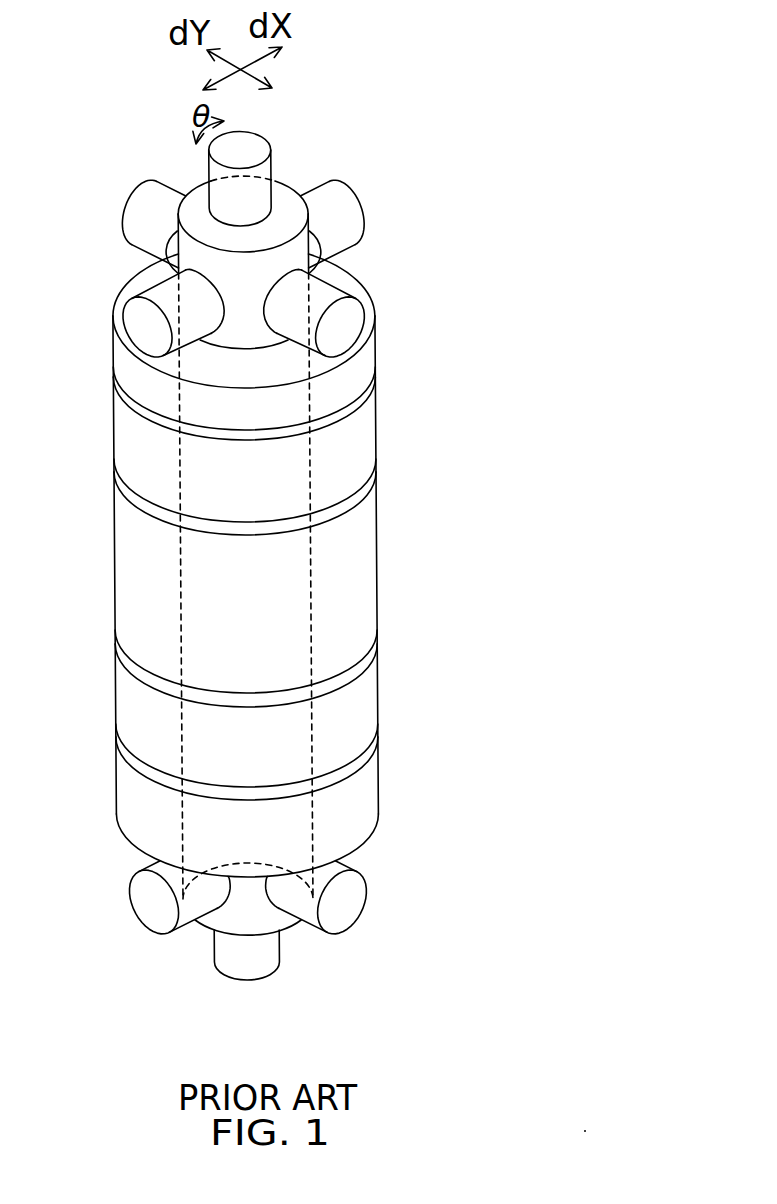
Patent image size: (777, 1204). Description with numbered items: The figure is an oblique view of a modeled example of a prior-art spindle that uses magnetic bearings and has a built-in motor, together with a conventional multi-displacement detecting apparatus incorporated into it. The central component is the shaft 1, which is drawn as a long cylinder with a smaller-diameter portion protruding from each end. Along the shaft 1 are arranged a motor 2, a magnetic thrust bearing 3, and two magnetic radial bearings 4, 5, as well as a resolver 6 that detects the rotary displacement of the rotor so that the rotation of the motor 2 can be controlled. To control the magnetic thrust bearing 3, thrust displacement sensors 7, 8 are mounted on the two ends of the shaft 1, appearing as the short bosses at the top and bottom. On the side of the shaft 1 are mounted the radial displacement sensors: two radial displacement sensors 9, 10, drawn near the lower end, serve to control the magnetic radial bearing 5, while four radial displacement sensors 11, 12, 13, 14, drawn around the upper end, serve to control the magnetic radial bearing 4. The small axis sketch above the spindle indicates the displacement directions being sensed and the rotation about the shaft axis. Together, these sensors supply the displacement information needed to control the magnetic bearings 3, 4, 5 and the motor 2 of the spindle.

The shaft 1 is at (283, 203).
The motor 2 is at (357, 560).
The magnetic thrust bearing 3 is at (357, 695).
The magnetic radial bearing 4 is at (360, 425).
The magnetic radial bearing 5 is at (367, 793).
The resolver 6 is at (374, 333).
The thrust displacement sensor 7 is at (257, 151).
The thrust displacement sensor 8 is at (272, 953).
The radial displacement sensor 9 is at (143, 902).
The radial displacement sensor 10 is at (348, 898).
The radial displacement sensor 11 is at (346, 195).
The radial displacement sensor 12 is at (142, 193).
The radial displacement sensor 13 is at (128, 314).
The radial displacement sensor 14 is at (347, 305).